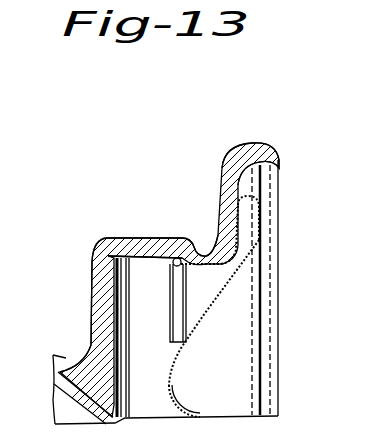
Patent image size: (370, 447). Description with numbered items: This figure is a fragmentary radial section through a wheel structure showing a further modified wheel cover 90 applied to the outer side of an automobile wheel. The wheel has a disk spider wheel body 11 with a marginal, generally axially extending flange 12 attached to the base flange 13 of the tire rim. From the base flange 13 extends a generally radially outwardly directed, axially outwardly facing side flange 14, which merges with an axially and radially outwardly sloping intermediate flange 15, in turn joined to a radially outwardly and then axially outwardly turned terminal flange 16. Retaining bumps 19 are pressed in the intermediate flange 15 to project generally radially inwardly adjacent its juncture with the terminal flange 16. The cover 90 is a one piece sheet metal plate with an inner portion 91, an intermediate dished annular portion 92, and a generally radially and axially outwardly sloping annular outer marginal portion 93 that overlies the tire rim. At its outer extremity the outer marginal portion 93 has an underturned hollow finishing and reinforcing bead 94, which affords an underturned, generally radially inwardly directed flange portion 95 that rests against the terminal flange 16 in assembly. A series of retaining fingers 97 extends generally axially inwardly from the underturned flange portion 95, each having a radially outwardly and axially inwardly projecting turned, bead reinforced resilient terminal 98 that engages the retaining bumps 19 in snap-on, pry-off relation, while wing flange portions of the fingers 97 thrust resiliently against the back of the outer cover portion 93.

The disk spider wheel body 11 is at (110, 410).
The marginal generally axially extending flange 12 is at (66, 382).
The base flange 13 is at (61, 367).
The side flange 14 is at (95, 318).
The intermediate flange 15 is at (163, 245).
The terminal flange 16 is at (260, 142).
The retaining bumps 19 is at (197, 250).
The cover 90 is at (265, 317).
The inner portion 91 is at (197, 415).
The intermediate dished annular portion 92 is at (177, 380).
The annular outer marginal portion 93 is at (238, 288).
The hollow finishing and reinforcing bead 94 is at (242, 198).
The underturned flange portion 95 is at (243, 224).
The retaining fingers 97 is at (200, 300).
The resilient terminals 98 is at (173, 264).